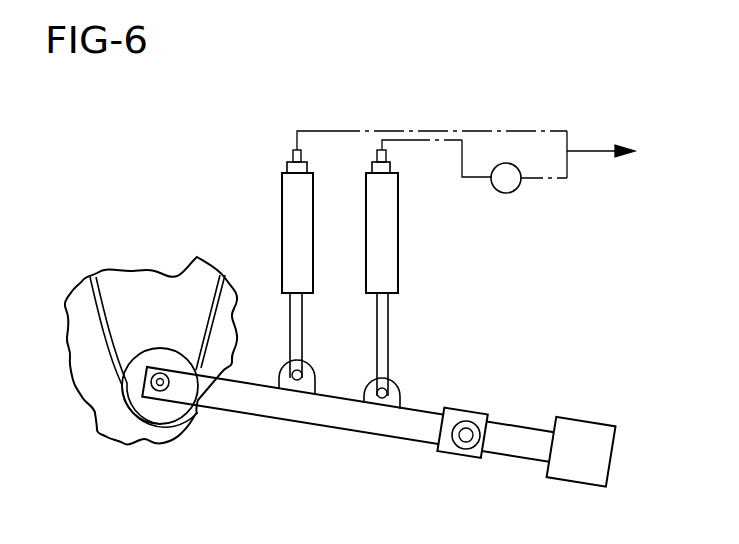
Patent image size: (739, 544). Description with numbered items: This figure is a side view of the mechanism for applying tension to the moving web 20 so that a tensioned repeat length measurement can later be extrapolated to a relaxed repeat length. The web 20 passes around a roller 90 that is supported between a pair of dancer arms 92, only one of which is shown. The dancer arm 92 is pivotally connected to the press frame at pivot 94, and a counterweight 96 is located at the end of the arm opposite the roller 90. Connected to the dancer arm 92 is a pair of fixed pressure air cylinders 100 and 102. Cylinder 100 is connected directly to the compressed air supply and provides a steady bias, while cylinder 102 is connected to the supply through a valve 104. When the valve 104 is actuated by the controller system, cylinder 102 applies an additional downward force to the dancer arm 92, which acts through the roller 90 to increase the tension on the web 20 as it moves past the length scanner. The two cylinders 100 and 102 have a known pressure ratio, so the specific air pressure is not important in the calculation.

The web 20 is at (103, 303).
The roller 90 is at (153, 407).
The dancer arm 92 is at (303, 412).
The pivotal connection to press frame 94 is at (460, 437).
The counterweight 96 is at (585, 437).
The fixed pressure air cylinder 100 is at (282, 217).
The fixed pressure air cylinder 102 is at (392, 240).
The valve 104 is at (506, 193).